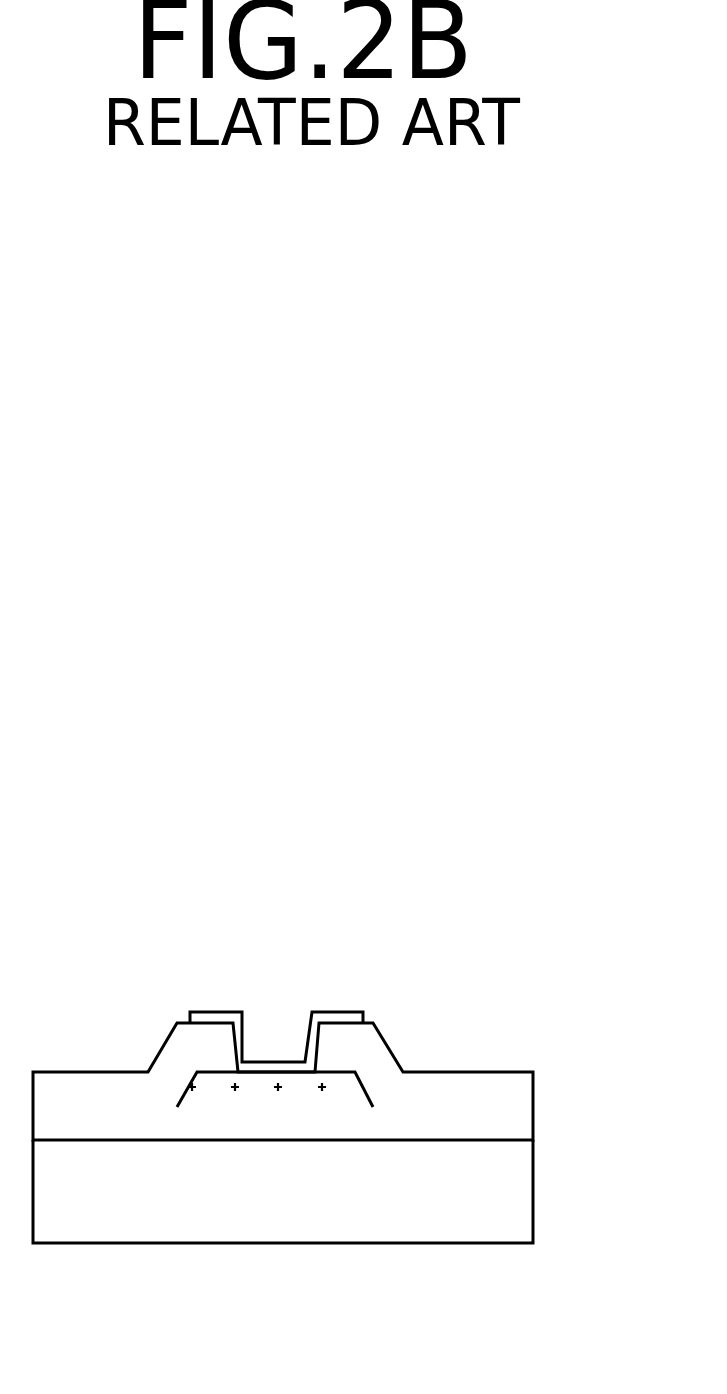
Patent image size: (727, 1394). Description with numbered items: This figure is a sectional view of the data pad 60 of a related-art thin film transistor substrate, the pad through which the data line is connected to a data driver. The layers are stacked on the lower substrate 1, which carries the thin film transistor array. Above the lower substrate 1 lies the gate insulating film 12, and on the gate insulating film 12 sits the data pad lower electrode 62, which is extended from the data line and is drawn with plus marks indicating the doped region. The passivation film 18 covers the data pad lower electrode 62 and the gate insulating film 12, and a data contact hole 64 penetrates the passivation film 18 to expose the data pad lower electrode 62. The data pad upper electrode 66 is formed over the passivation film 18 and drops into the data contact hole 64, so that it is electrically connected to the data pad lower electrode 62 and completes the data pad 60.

The lower substrate 1 is at (522, 1206).
The gate insulating film 12 is at (522, 1128).
The passivation film 18 is at (522, 1091).
The data pad 60 is at (373, 980).
The data pad lower electrode 62 is at (272, 1093).
The data contact hole 64 is at (273, 1043).
The data pad upper electrode 66 is at (217, 1012).